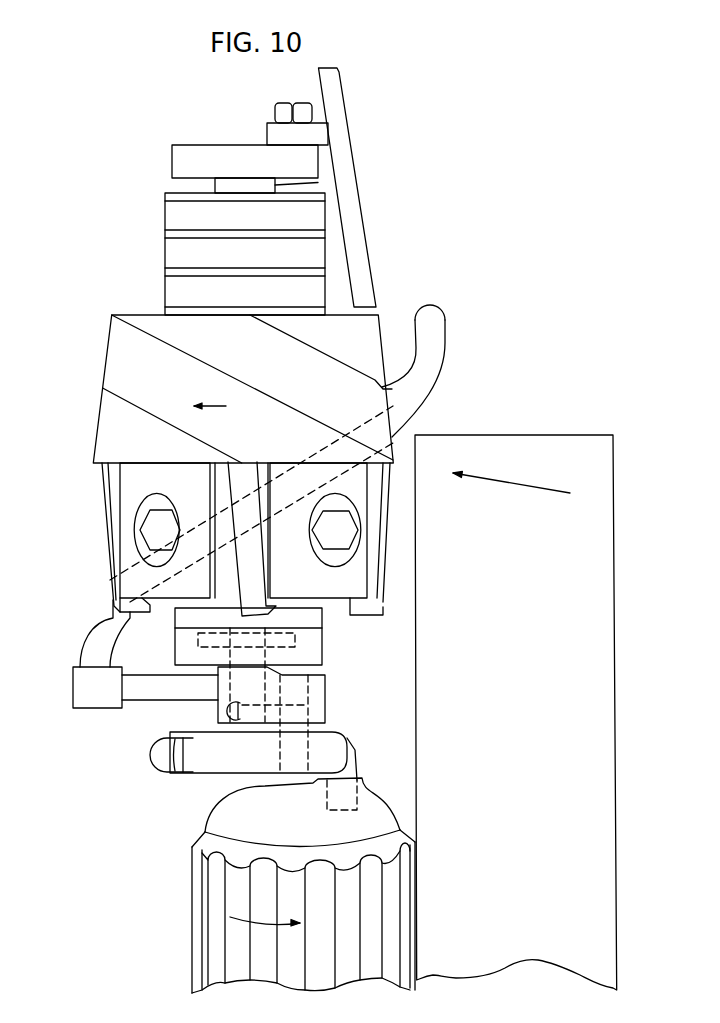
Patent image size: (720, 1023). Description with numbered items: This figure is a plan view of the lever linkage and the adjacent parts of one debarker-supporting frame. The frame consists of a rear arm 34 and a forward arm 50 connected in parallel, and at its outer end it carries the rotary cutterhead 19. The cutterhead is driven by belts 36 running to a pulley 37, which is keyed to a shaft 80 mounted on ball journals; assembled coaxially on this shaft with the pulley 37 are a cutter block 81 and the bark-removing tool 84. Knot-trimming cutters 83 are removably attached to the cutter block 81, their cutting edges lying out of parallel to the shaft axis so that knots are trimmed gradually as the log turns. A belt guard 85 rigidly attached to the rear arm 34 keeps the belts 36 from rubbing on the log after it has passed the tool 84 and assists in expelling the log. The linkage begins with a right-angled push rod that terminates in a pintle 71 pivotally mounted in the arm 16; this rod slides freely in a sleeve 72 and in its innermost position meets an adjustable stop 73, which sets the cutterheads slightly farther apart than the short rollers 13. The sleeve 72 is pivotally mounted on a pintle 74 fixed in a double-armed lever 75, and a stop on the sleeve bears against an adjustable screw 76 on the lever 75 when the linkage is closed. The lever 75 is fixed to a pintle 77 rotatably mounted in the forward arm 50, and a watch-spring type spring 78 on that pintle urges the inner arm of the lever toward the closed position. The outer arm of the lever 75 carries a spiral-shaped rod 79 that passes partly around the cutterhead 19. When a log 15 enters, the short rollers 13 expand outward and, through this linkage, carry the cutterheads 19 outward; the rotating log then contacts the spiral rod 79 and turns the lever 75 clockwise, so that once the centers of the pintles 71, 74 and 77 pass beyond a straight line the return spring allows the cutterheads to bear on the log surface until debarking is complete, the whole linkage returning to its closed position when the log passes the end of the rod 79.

The short rollers 13 is at (192, 878).
The log 15 is at (543, 435).
The arm 16 is at (203, 811).
The rotary cutterhead 19 is at (142, 311).
The rear arm 34 is at (195, 145).
The belts 36 is at (165, 218).
The pulley 37 is at (180, 193).
The forward arm 50 is at (322, 633).
The pintle 71 is at (353, 752).
The sleeve 72 is at (338, 733).
The adjustable stop 73 is at (148, 755).
The pintle 74 is at (310, 683).
The double-armed lever 75 is at (73, 683).
The adjustable screw 76 is at (222, 712).
The pintle 77 is at (230, 660).
The spring 78 is at (295, 645).
The spiral-shaped rod 79 is at (446, 338).
The shaft 80 is at (318, 182).
The cutter block 81 is at (147, 483).
The knot-trimming cutters 83 is at (110, 534).
The bark-removing tool 84 is at (119, 394).
The belt guard 85 is at (363, 220).